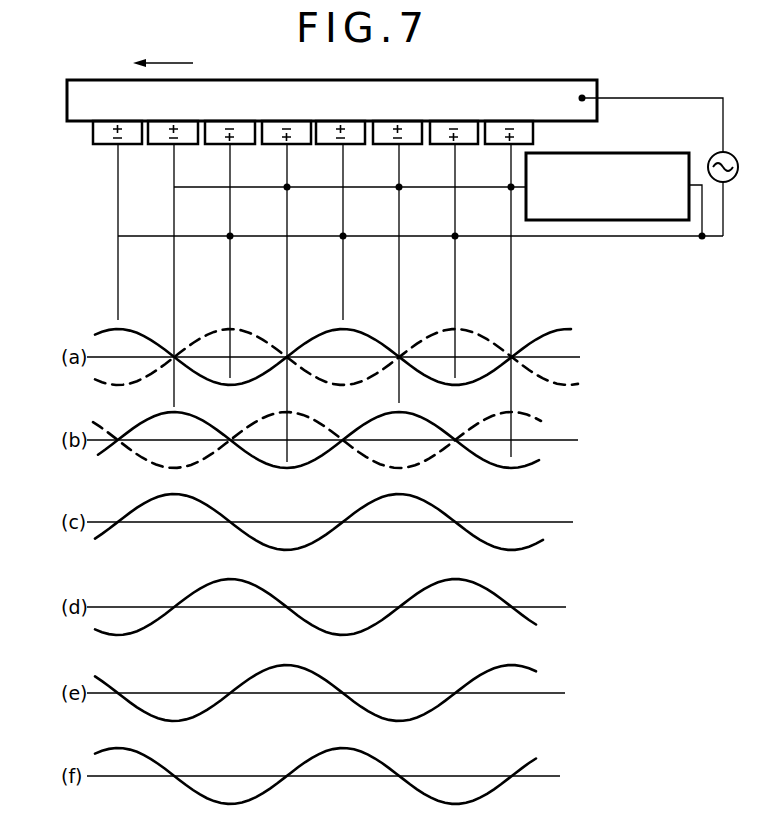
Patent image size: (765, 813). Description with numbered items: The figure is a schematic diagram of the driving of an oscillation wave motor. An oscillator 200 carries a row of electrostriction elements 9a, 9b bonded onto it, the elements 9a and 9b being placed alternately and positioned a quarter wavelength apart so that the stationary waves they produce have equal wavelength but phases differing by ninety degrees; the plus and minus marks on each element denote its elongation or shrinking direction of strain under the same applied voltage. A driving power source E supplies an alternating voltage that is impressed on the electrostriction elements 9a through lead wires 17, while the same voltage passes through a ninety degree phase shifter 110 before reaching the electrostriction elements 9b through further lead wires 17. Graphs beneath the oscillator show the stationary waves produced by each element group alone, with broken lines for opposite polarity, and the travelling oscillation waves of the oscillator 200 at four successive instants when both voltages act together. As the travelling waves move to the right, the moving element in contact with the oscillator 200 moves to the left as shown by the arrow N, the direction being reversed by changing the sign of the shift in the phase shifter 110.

The oscillator 200 is at (497, 90).
The electrostriction element 9a is at (103, 146).
The electrostriction element 9b is at (161, 146).
The lead wires 17 is at (494, 189).
The 90° phase shifter 110 is at (644, 153).
The driving power source E is at (726, 151).
The arrow N is at (153, 62).